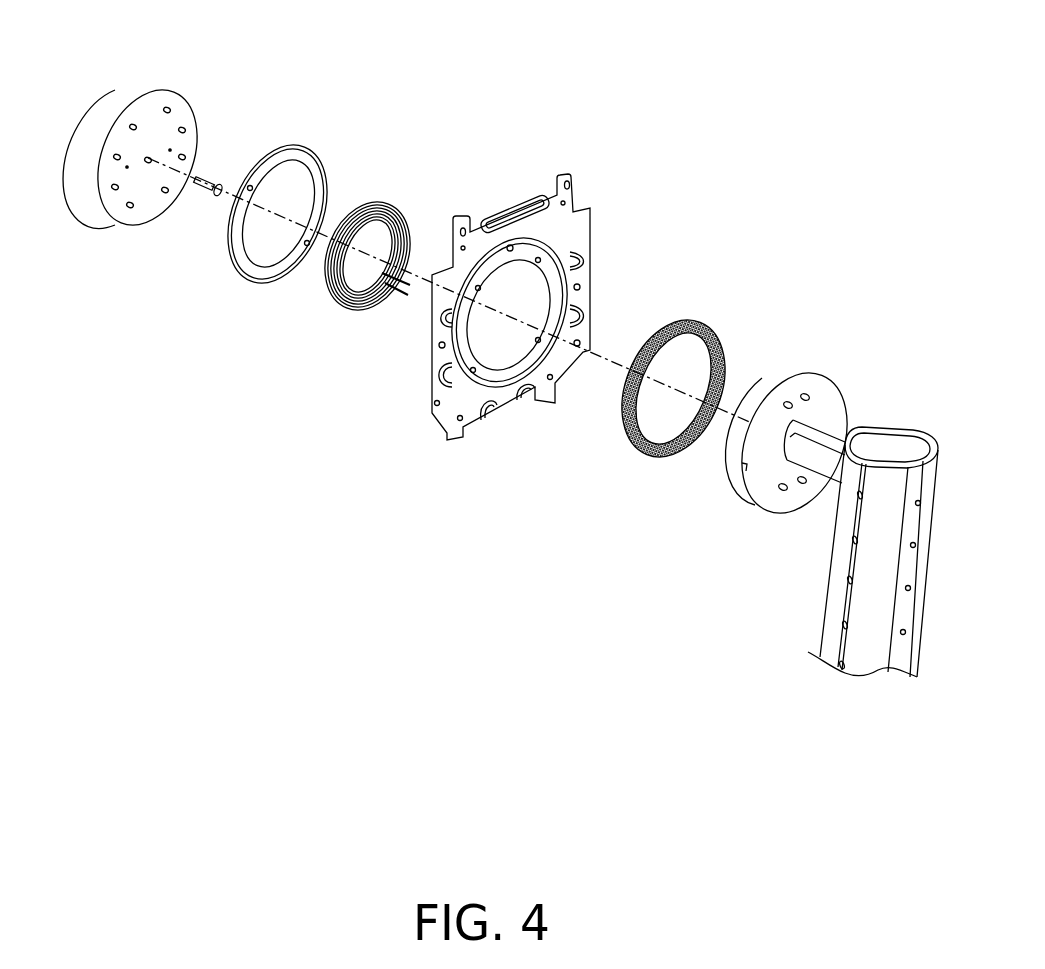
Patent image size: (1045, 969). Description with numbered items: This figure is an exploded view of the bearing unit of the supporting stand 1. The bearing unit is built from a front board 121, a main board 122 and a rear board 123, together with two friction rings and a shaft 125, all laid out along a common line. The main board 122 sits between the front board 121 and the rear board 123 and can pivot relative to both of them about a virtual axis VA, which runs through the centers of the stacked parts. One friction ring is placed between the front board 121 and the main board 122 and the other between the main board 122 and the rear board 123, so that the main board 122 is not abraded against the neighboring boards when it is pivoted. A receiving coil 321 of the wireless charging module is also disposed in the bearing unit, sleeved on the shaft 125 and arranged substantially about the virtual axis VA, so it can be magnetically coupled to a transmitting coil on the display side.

The supporting stand 1 is at (898, 440).
The front board 121 is at (165, 99).
The main board 122 is at (552, 200).
The rear board 123 is at (812, 383).
The shaft 125 is at (201, 177).
The receiving coil 321 is at (385, 203).
The virtual axis VA is at (110, 143).